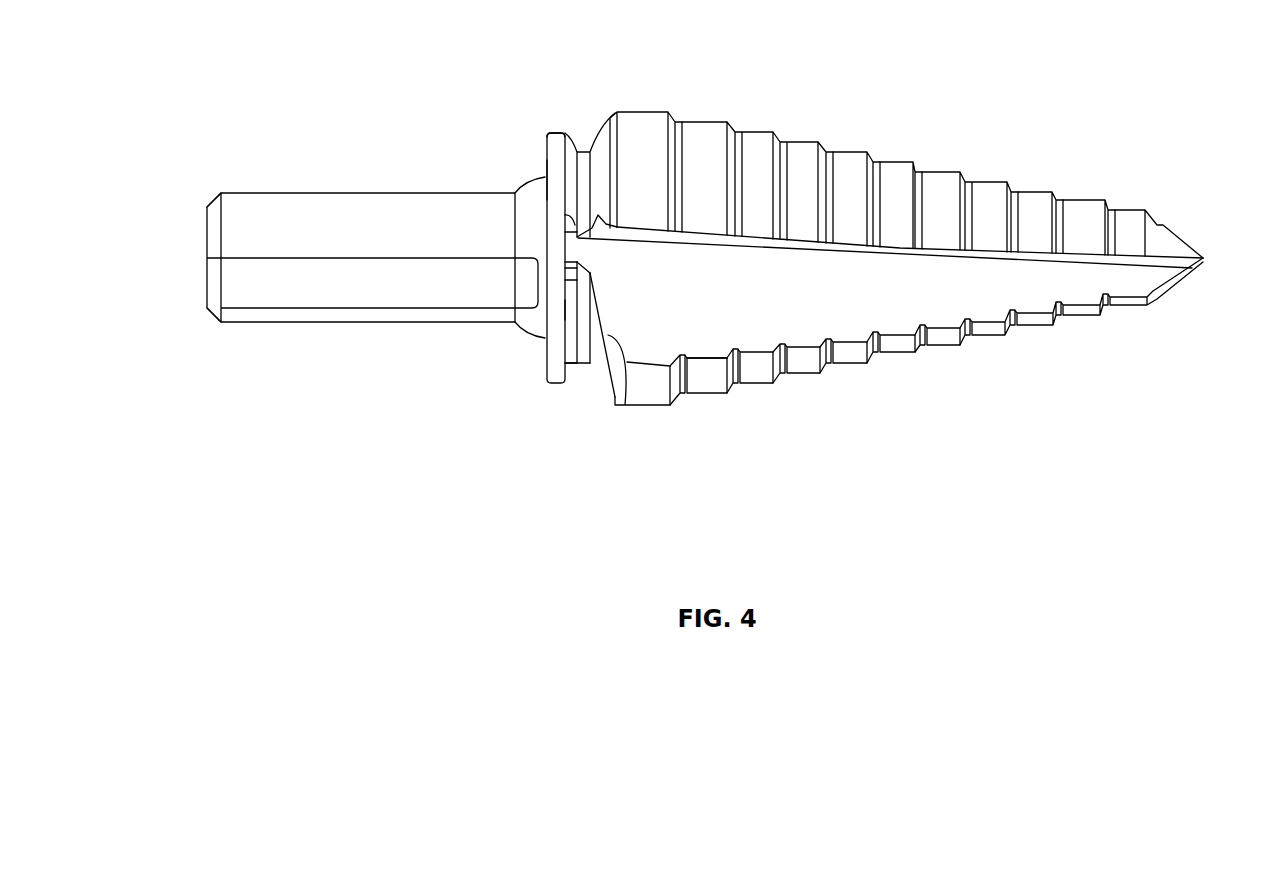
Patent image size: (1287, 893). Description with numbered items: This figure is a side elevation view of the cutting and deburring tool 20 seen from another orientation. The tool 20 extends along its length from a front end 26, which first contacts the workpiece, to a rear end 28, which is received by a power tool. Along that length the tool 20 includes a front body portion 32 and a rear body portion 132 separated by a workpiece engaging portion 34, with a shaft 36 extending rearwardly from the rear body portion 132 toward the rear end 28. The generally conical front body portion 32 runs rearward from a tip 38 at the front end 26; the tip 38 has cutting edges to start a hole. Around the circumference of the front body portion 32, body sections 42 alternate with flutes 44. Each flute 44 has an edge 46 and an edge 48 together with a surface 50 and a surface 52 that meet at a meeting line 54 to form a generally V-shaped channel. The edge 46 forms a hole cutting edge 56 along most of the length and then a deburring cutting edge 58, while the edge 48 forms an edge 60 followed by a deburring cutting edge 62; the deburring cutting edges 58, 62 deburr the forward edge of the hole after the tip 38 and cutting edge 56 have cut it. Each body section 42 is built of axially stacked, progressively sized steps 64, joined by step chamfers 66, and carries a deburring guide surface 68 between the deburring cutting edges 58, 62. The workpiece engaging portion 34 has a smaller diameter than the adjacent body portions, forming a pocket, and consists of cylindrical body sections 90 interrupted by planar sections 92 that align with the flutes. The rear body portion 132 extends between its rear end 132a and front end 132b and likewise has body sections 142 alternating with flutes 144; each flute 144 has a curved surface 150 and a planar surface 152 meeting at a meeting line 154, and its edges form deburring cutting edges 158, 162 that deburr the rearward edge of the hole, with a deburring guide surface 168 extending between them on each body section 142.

The cutting and deburring tool 20 is at (958, 64).
The front end 26 is at (1208, 258).
The rear end 28 is at (207, 303).
The front body portion 32 is at (809, 388).
The workpiece engaging portion 34 is at (583, 378).
The shaft 36 is at (256, 215).
The tip 38 is at (1168, 238).
The body sections 42 is at (1056, 179).
The flutes 44 is at (988, 304).
The edge 46 is at (845, 235).
The edge 48 is at (893, 335).
The surface 50 is at (1073, 258).
The surface 52 is at (740, 303).
The meeting line 54 is at (852, 256).
The hole cutting edge 56 is at (803, 243).
The deburring cutting edge 58 is at (608, 222).
The edge 60 is at (700, 360).
The deburring cutting edge 62 is at (612, 340).
The steps 64 is at (988, 192).
The step chamfer 66 is at (918, 160).
The deburring guide surface 68 is at (602, 167).
The cylindrical body sections 90 is at (582, 298).
The planar sections 92 is at (583, 253).
The rear body portion 132 is at (549, 397).
The rear end 132a is at (546, 160).
The front end 132b is at (580, 150).
The body sections 142 is at (556, 138).
The flutes 144 is at (544, 285).
The surface 150 is at (578, 235).
The surface 152 is at (558, 268).
The meeting line 154 is at (558, 267).
The deburring cutting edge 158 is at (557, 228).
The deburring cutting edge 162 is at (565, 310).
The deburring guide surface 168 is at (575, 365).